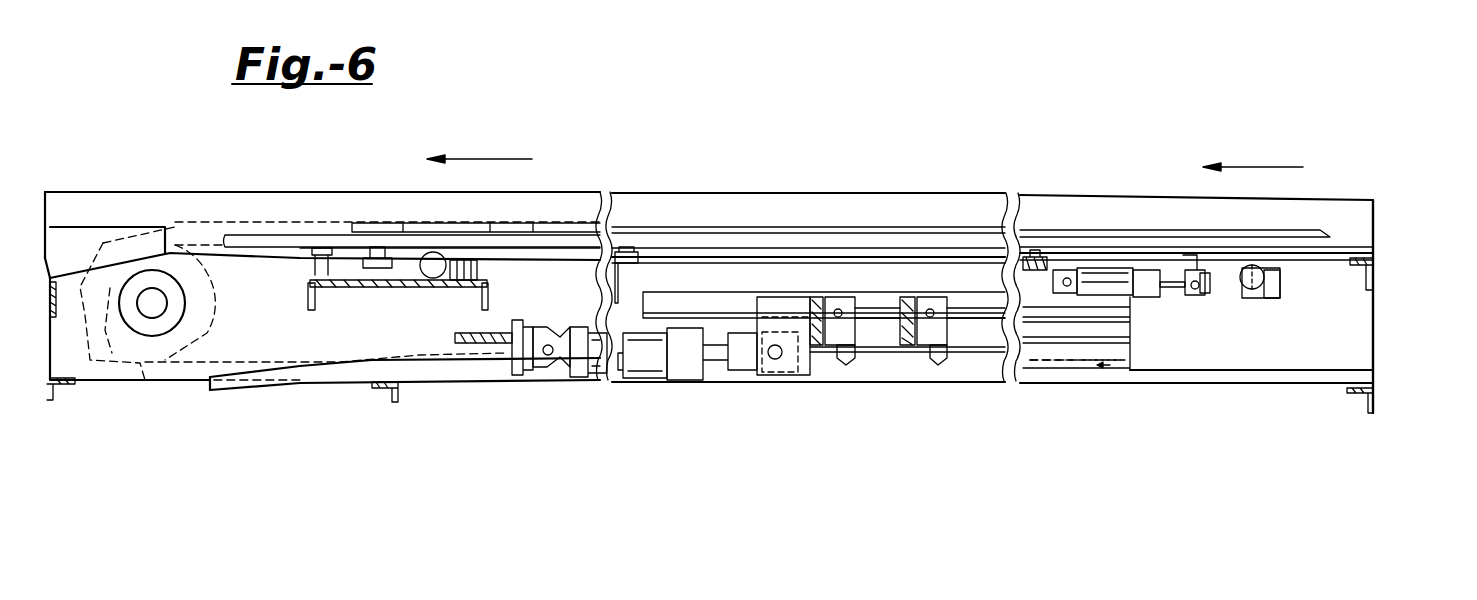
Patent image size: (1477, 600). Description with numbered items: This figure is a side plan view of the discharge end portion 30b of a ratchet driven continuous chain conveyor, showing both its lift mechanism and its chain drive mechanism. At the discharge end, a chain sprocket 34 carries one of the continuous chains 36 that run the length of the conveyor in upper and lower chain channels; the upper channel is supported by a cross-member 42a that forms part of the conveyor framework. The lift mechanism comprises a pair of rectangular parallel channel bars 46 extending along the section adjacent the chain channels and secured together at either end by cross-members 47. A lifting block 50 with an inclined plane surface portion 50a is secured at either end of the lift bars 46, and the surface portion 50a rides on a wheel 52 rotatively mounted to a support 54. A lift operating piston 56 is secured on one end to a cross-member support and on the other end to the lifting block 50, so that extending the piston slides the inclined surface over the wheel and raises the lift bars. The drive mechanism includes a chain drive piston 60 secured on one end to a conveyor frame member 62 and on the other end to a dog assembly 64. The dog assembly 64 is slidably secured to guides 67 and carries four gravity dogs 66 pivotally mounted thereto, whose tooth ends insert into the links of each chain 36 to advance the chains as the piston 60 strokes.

The discharge end portion 30b is at (728, 174).
The continuous chain 36 is at (207, 227).
The chain sprocket 34 is at (203, 332).
The cross-member 47 is at (381, 255).
The conveyor frame member 62 is at (490, 370).
The chain drive piston 60 is at (645, 372).
The guide 67 is at (653, 303).
The dog assembly 64 is at (795, 297).
The gravity dog 66 is at (840, 370).
The cross-member 42a is at (1053, 268).
The lift operating piston 56 is at (1143, 297).
The lifting block 50 is at (1220, 267).
The inclined plane surface portion 50a is at (1255, 268).
The wheel 52 is at (1280, 273).
The support 54 is at (1272, 297).
The channel bar 46 is at (1371, 250).